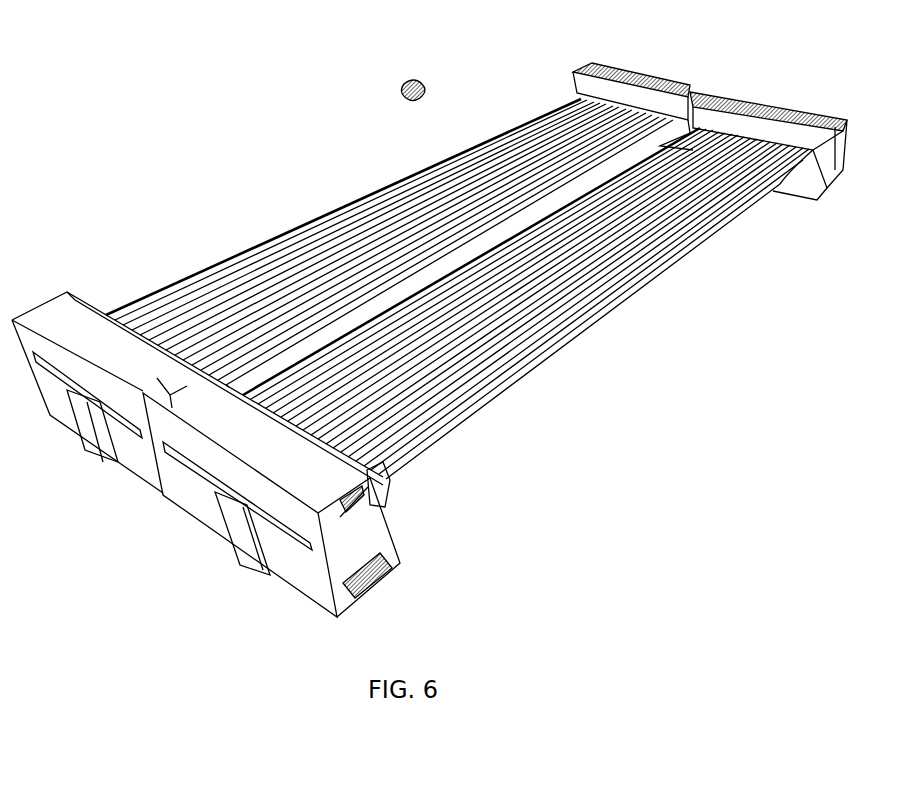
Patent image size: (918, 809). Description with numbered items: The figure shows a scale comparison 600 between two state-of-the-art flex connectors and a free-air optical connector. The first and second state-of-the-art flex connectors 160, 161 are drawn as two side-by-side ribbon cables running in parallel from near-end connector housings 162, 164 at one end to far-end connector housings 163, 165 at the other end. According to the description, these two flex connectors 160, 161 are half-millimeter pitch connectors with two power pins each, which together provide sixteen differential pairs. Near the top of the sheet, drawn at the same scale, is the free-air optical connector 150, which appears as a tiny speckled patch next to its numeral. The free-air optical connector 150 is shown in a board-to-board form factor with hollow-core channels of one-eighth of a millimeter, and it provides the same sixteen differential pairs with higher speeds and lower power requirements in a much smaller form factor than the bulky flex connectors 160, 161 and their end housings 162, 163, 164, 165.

The scale comparison 600 is at (146, 33).
The free-air optical connector 150 is at (402, 90).
The first state-of-the-art flex connector 160 is at (609, 344).
The second state-of-the-art flex connector 161 is at (324, 190).
The second connector 162 is at (210, 525).
The fourth connector 163 is at (805, 111).
The first connector 164 is at (74, 430).
The third connector 165 is at (687, 85).